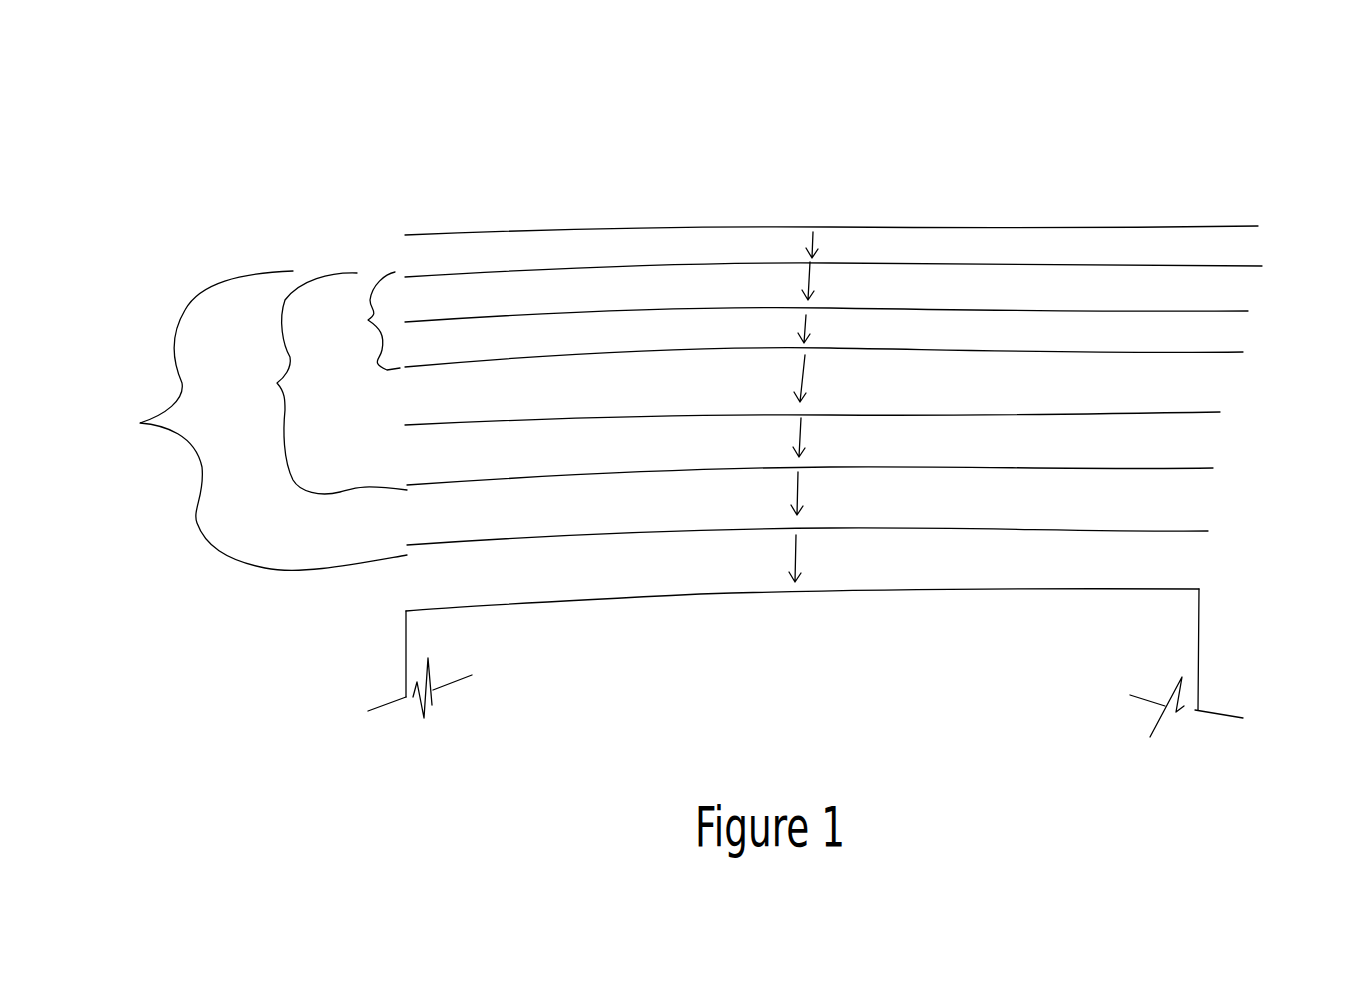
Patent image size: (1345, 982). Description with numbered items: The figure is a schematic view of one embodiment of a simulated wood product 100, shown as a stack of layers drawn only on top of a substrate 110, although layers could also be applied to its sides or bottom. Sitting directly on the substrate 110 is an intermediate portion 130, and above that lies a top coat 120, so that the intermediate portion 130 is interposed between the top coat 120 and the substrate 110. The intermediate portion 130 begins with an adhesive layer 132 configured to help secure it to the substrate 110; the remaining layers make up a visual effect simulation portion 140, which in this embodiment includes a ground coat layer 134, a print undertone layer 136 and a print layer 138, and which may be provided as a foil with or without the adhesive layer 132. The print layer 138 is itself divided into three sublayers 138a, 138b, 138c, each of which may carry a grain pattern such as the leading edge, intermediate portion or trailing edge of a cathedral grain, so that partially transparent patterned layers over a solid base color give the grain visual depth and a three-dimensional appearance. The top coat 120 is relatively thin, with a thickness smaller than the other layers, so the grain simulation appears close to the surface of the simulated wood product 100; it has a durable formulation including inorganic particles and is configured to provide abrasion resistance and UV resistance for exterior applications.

The simulated wood product 100 is at (862, 165).
The substrate 110 is at (1200, 608).
The top coat 120 is at (1237, 222).
The intermediate portion 130 is at (140, 423).
The adhesive layer 132 is at (1185, 528).
The ground coat layer 134 is at (1197, 465).
The print undertone layer 136 is at (1208, 410).
The print layer 138 is at (367, 320).
The sublayer 138a is at (1225, 348).
The sublayer 138b is at (1238, 310).
The sublayer 138c is at (1243, 266).
The visual effect simulation portion 140 is at (277, 383).